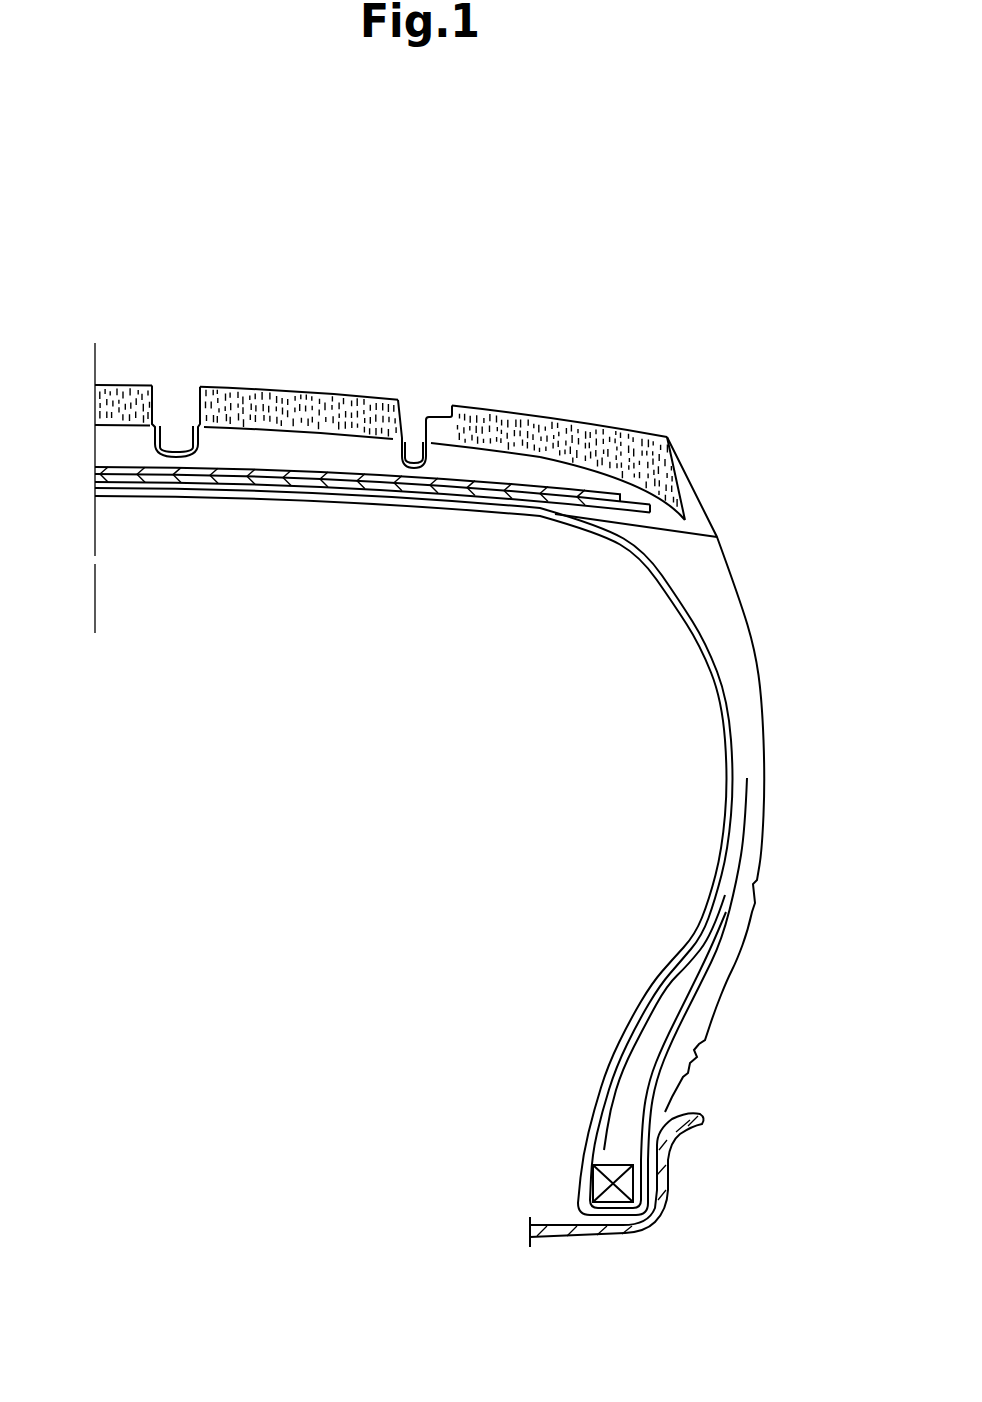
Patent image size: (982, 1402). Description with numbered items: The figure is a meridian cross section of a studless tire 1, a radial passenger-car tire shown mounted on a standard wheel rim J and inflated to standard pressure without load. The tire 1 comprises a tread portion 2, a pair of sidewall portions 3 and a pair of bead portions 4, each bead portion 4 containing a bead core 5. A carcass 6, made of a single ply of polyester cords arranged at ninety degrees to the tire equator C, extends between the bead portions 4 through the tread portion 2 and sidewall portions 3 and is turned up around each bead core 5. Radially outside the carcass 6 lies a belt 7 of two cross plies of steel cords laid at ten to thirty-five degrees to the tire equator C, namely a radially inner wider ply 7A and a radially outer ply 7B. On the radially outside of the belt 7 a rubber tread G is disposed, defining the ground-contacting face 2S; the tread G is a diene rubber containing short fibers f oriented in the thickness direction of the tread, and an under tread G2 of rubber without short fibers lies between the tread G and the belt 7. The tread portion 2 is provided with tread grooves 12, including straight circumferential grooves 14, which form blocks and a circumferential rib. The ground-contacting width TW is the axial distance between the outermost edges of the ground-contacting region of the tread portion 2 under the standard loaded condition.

The studless tire 1 is at (683, 425).
The tread portion 2 is at (390, 391).
The ground-contacting face 2S is at (472, 407).
The sidewall portion 3 is at (770, 657).
The bead portion 4 is at (421, 905).
The bead core 5 is at (613, 1195).
The carcass 6 is at (728, 780).
The belt 7 is at (372, 560).
The radially inner wider ply 7A is at (258, 481).
The radially outer ply 7B is at (334, 476).
The tread groove 12 is at (176, 359).
The circumferential groove 14 is at (172, 392).
The rubber tread G is at (293, 365).
The under tread G2 is at (228, 437).
The short fibers f is at (585, 432).
The tire equator C is at (98, 472).
The standard wheel rim J is at (665, 1148).
The ground-contacting width TW is at (666, 437).